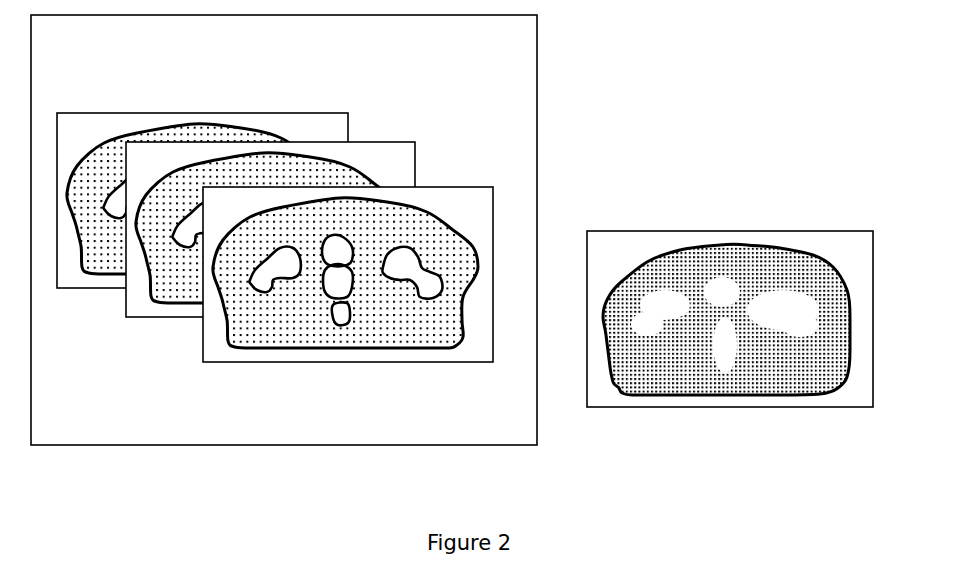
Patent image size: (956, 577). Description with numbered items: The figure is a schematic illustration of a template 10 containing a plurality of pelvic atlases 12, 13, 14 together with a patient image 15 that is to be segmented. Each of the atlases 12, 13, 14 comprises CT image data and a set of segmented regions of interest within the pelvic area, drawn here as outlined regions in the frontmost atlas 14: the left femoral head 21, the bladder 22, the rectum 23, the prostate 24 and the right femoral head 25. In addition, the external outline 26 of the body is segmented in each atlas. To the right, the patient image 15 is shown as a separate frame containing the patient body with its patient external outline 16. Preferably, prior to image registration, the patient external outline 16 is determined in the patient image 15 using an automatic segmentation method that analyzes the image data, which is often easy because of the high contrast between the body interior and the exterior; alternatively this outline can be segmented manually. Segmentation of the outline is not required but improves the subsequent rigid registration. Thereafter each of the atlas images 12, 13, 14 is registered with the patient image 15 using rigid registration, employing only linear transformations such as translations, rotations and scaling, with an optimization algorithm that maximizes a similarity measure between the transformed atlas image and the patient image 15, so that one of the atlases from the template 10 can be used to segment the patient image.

The template 10 is at (112, 453).
The pelvic atlas 12 is at (326, 113).
The pelvic atlas 13 is at (385, 141).
The pelvic atlas 14 is at (357, 241).
The patient image 15 is at (730, 316).
The patient external outline 16 is at (733, 397).
The left femoral head 21 is at (258, 288).
The bladder 22 is at (328, 245).
The rectum 23 is at (342, 277).
The prostate 24 is at (350, 295).
The right femoral head 25 is at (393, 272).
The external outline 26 is at (460, 343).